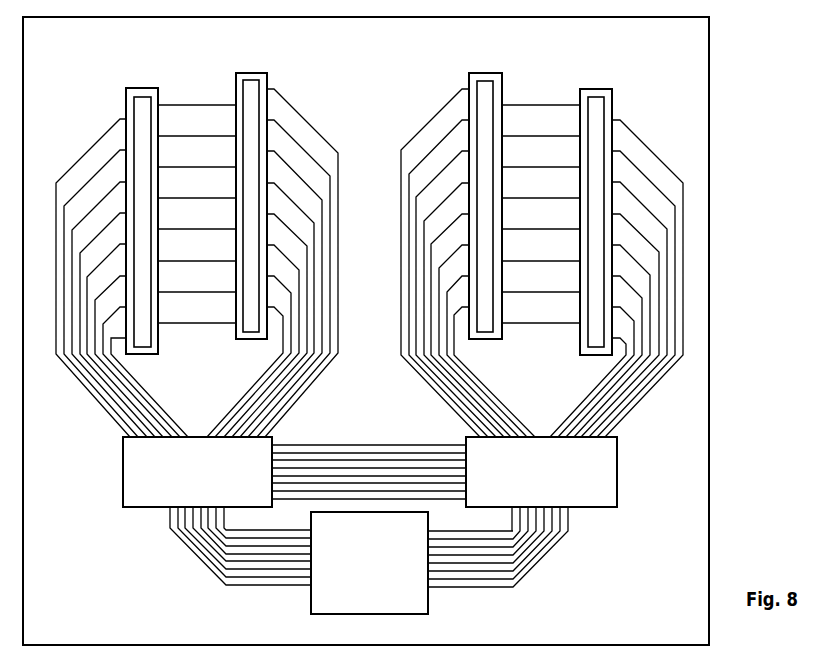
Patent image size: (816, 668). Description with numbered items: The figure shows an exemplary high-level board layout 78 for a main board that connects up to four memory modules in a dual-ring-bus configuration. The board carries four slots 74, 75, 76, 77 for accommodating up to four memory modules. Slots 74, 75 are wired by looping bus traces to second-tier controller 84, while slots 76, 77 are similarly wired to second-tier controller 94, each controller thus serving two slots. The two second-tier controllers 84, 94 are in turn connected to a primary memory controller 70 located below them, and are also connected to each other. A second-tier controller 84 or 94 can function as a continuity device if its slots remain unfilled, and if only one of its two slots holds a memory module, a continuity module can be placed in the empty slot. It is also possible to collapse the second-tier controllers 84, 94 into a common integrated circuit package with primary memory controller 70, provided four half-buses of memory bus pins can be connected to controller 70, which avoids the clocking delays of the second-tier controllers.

The primary memory controller 70 is at (358, 602).
The slot 74 is at (142, 88).
The slot 75 is at (247, 73).
The slot 76 is at (480, 73).
The slot 77 is at (593, 89).
The memory system 78 is at (94, 607).
The second-tier controller 84 is at (186, 501).
The second-tier controller 94 is at (530, 501).